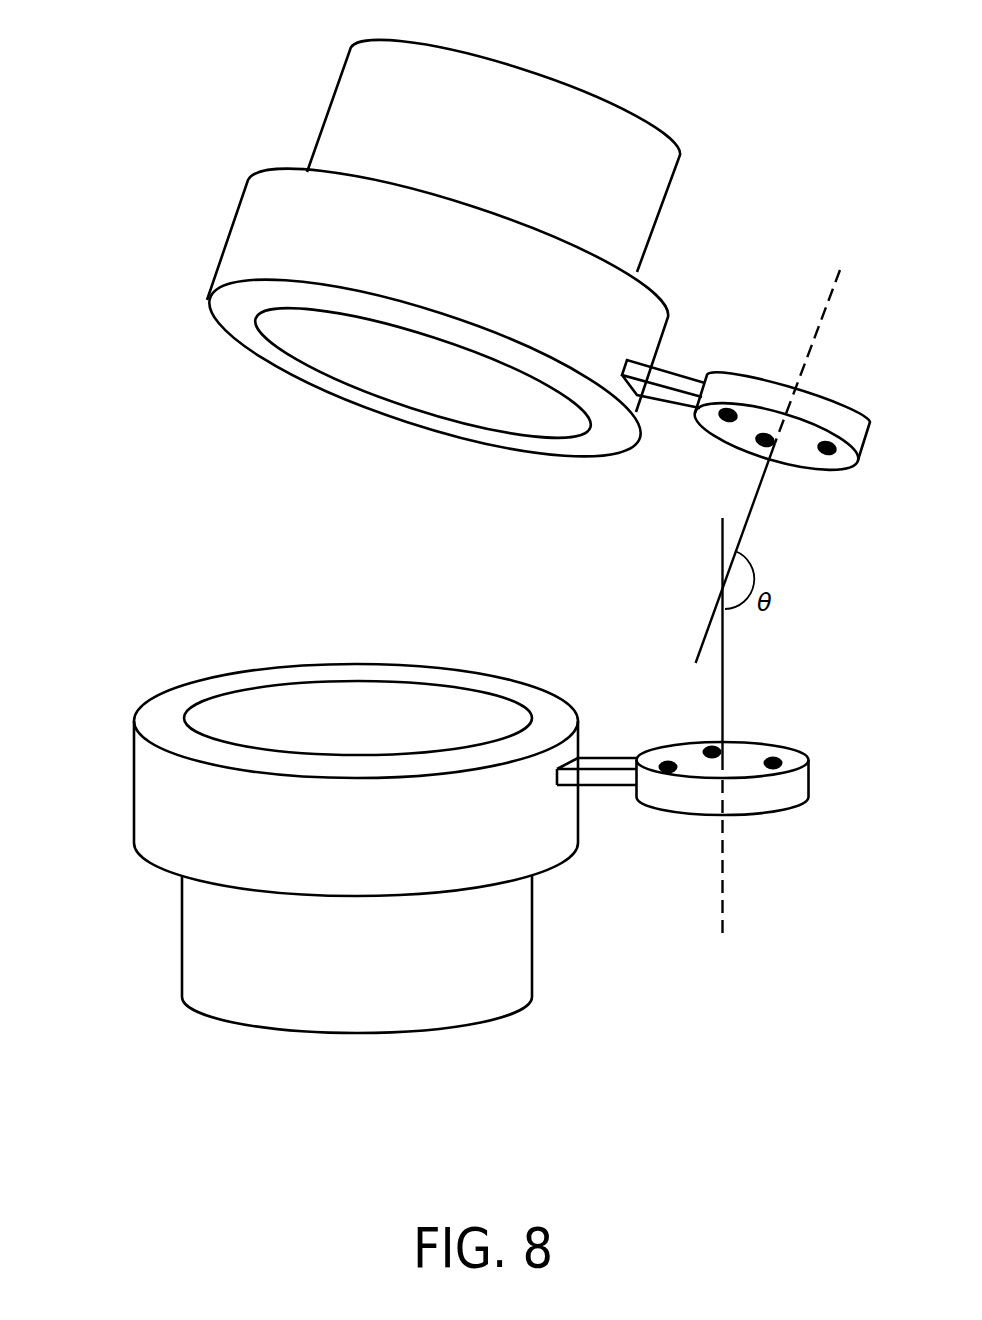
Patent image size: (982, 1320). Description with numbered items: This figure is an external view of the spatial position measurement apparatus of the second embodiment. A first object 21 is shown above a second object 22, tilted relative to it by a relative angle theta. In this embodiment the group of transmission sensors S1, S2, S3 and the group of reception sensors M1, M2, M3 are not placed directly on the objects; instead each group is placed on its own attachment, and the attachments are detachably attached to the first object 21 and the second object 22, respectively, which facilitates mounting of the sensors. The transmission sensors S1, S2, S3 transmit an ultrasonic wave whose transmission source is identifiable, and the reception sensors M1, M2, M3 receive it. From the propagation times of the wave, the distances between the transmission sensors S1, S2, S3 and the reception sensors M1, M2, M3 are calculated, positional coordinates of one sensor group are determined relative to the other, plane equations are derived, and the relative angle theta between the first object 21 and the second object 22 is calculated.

The first object 21 is at (347, 112).
The second object 22 is at (152, 792).
The transmission sensor S1 is at (721, 420).
The transmission sensor S2 is at (763, 447).
The transmission sensor S3 is at (833, 458).
The reception sensor M1 is at (663, 763).
The reception sensor M2 is at (712, 748).
The reception sensor M3 is at (778, 758).